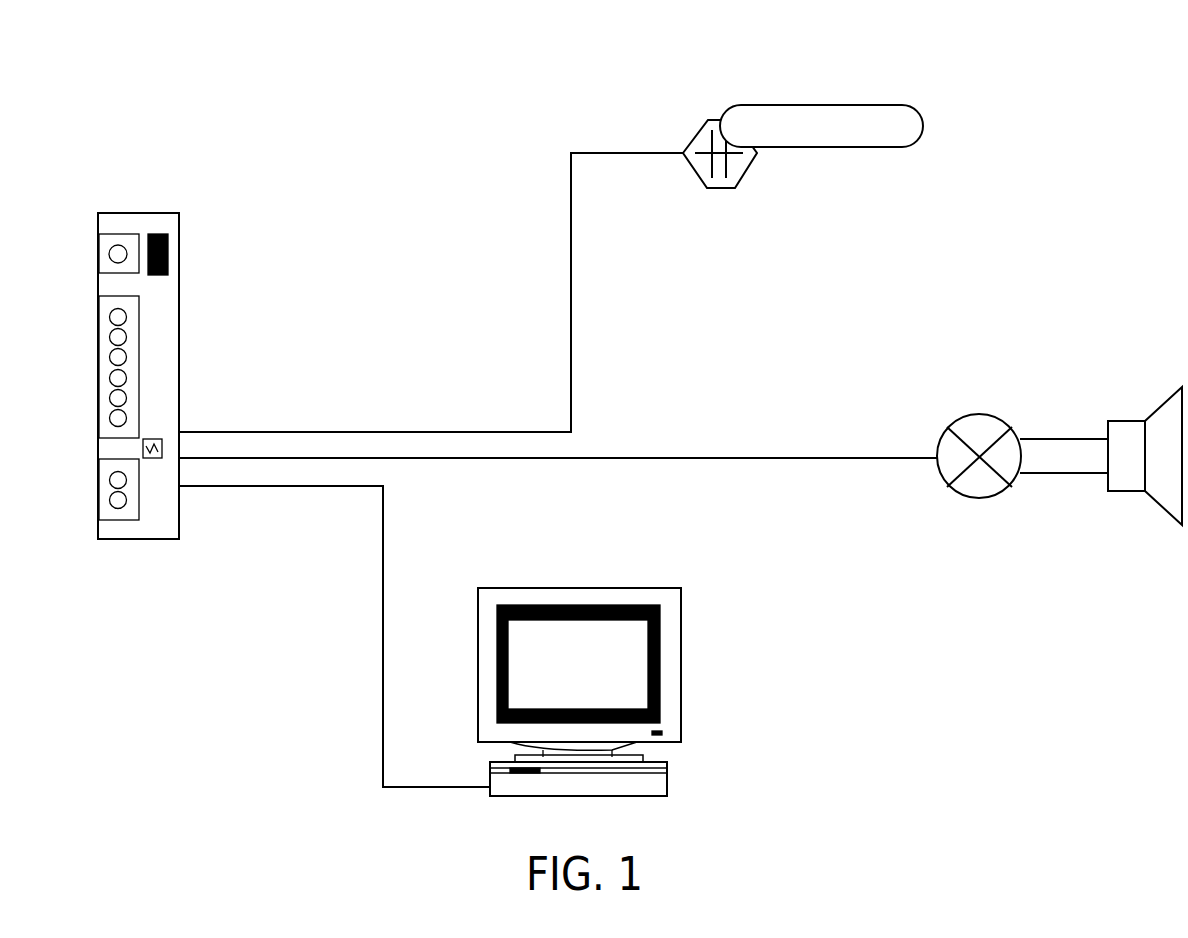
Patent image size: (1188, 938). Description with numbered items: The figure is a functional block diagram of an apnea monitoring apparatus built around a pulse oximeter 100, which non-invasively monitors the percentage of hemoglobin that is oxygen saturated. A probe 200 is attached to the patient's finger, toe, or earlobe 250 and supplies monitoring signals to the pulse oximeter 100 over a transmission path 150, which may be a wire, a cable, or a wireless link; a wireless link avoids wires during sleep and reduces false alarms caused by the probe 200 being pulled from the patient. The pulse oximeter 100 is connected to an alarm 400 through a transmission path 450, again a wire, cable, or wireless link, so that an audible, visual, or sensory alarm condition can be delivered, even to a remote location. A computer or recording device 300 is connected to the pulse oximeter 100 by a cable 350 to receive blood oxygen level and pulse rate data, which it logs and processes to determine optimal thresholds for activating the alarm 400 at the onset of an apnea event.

The pulse oximeter 100 is at (138, 203).
The transmission path 150 is at (557, 263).
The probe 200 is at (693, 127).
The finger, toe, or earlobe 250 is at (787, 98).
The computer or recording device 300 is at (695, 677).
The cable 350 is at (396, 580).
The alarm 400 is at (963, 400).
The transmission path 450 is at (693, 443).